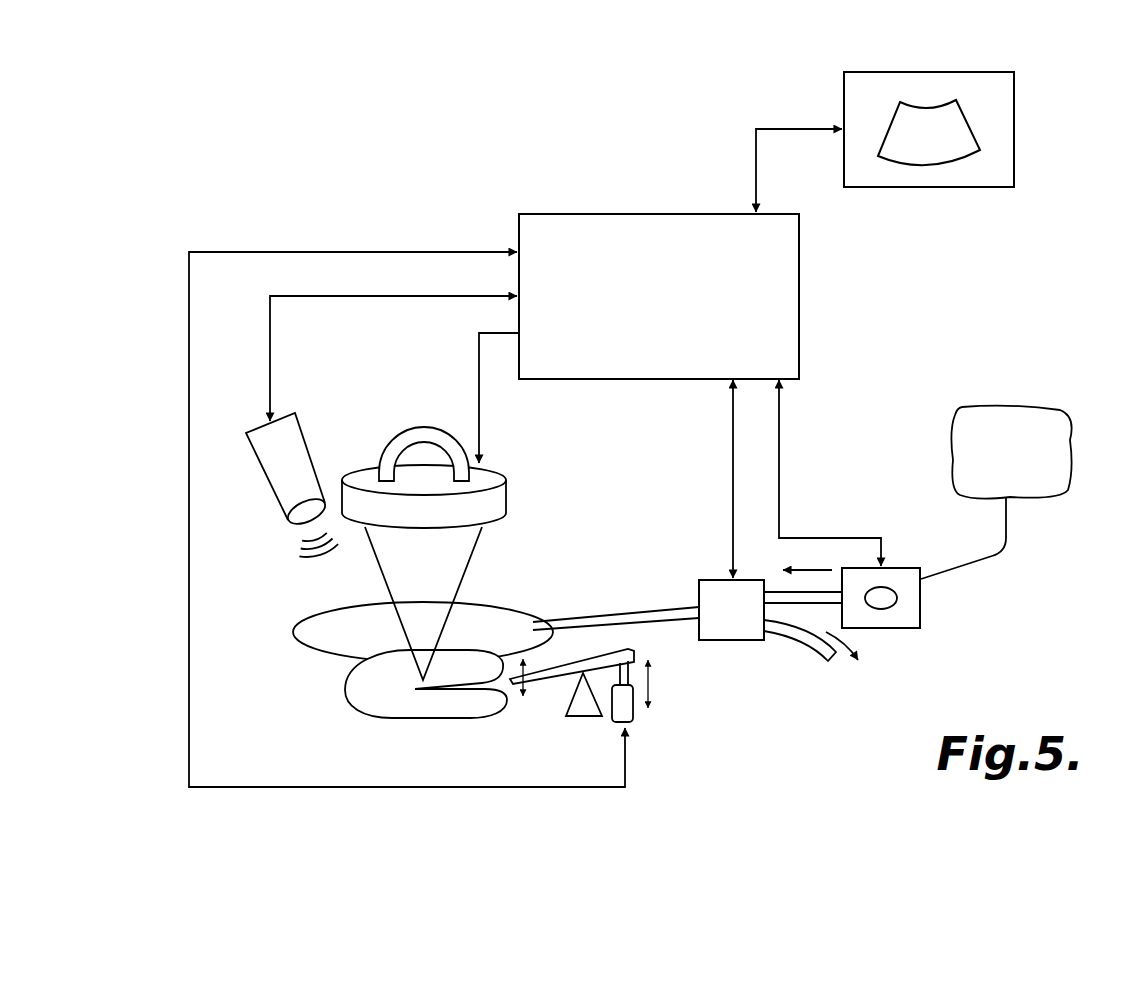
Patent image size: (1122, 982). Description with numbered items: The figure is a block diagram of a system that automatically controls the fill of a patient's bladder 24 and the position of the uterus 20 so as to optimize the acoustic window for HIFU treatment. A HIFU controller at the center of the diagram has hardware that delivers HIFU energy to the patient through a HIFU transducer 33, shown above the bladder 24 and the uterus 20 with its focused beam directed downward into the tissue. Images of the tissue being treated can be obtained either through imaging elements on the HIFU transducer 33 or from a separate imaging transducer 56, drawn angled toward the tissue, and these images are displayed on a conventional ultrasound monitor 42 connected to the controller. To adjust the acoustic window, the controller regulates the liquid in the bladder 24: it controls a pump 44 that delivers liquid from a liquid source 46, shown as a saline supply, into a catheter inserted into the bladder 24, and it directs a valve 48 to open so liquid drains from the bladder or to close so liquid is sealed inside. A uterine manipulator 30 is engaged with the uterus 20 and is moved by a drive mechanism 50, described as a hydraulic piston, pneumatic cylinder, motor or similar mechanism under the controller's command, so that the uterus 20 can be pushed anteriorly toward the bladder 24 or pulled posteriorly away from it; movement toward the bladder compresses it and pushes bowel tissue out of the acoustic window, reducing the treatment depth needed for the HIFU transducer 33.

The uterine manipulator 30 is at (645, 212).
The ultrasound monitor 42 is at (1008, 138).
The HIFU transducer 33 is at (508, 495).
The imaging transducer 56 is at (264, 478).
The bladder 24 is at (513, 598).
The uterus 20 is at (360, 710).
The actuator 50 is at (636, 722).
The valve 48 is at (744, 643).
The pump 44 is at (922, 620).
The liquid source 46 is at (1060, 495).